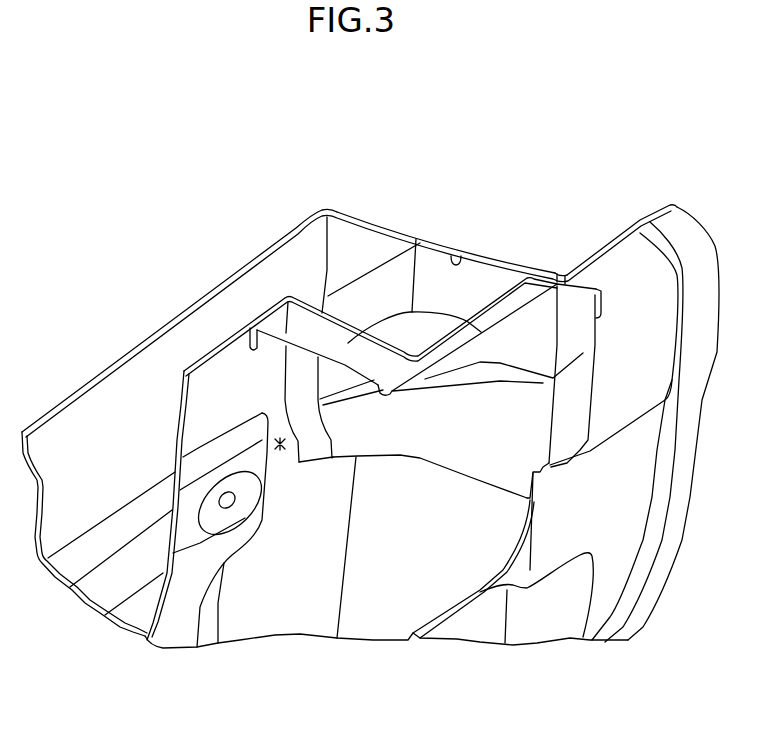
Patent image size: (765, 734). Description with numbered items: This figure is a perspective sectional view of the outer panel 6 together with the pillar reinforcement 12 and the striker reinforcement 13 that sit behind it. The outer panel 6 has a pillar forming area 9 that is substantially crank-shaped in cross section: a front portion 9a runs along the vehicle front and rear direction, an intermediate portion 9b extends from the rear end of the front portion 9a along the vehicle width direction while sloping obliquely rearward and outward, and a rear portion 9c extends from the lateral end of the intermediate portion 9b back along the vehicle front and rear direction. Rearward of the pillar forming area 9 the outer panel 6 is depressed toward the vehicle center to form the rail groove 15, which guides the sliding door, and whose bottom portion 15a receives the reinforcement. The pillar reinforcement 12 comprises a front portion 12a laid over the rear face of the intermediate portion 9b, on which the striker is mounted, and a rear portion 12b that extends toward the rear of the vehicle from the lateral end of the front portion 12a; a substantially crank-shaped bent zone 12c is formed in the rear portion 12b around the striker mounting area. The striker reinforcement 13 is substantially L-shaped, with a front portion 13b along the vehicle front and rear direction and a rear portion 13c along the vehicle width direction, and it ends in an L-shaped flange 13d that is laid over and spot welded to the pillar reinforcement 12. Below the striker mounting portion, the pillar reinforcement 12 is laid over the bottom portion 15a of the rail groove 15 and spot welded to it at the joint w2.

The outer panel 6 is at (49, 370).
The pillar forming area 9 is at (351, 218).
The front portion 9a is at (620, 231).
The intermediate portion 9b is at (397, 231).
The rear portion 9c is at (286, 236).
The pillar reinforcement 12 is at (362, 628).
The front portion 12a is at (481, 253).
The rear portion 12b is at (371, 294).
The bent zone 12c is at (281, 293).
The striker reinforcement 13 is at (425, 378).
The front portion 13b is at (512, 312).
The rear portion 13c is at (333, 344).
The flange 13d is at (260, 317).
The rail groove 15 is at (95, 585).
The bottom portion 15a is at (135, 550).
The joint w2 is at (284, 455).